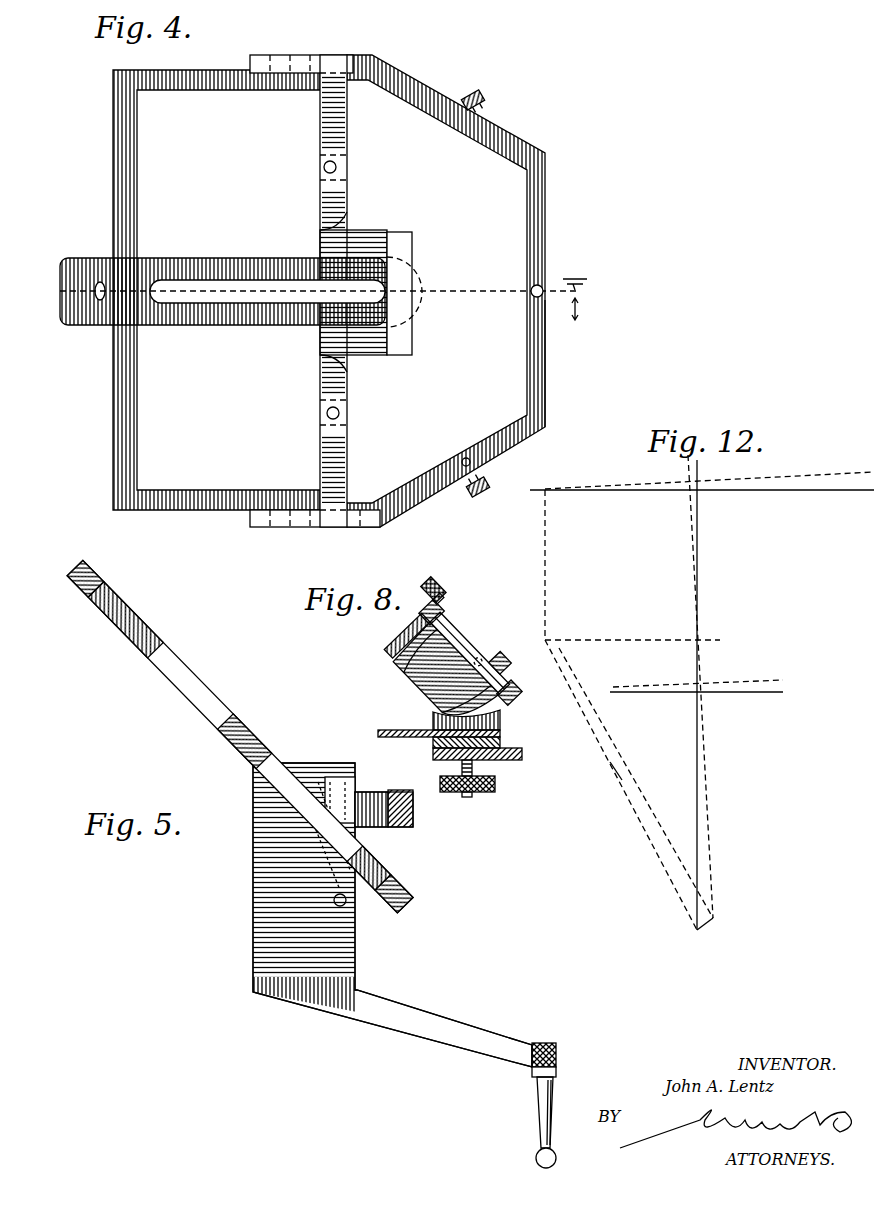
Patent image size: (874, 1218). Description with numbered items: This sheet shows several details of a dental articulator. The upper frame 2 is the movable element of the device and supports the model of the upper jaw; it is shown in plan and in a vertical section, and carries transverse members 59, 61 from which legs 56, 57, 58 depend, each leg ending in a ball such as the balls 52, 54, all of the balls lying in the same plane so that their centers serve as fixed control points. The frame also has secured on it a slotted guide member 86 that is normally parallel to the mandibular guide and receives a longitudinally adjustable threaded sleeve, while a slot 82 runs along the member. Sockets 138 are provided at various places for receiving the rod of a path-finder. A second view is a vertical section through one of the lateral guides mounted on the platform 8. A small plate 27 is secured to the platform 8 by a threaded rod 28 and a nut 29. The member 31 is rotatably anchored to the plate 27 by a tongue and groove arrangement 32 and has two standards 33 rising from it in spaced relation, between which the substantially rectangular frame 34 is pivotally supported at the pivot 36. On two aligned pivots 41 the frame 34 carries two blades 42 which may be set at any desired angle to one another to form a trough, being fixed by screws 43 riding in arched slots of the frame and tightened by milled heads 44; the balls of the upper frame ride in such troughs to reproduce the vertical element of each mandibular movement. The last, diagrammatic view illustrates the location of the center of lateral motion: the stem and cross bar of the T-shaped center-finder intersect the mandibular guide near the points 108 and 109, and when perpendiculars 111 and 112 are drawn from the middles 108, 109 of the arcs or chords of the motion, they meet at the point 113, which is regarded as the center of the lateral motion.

In FIG. 4, the upper frame 2 is at (551, 203).
In FIG. 5, the upper frame 2 is at (293, 762).
In FIG. 8, the platform 8 is at (505, 760).
In FIG. 8, the plate 27 is at (500, 742).
In FIG. 8, the threaded rod 28 is at (462, 765).
In FIG. 8, the nut 29 is at (480, 795).
In FIG. 8, the member 31 is at (425, 732).
In FIG. 8, the tongue and groove arrangement 32 is at (486, 716).
In FIG. 8, the standards 33 is at (514, 659).
In FIG. 8, the frame 34 is at (418, 691).
In FIG. 8, the pivot 36 is at (497, 642).
In FIG. 8, the alined pivots 41 is at (484, 643).
In FIG. 8, the blades 42 is at (481, 642).
In FIG. 8, the screws 43 is at (387, 648).
In FIG. 8, the milled heads 44 is at (384, 613).
In FIG. 5, the ball 52 is at (537, 1162).
In FIG. 5, the ball 54 is at (346, 903).
In FIG. 4, the leg 56 is at (535, 300).
In FIG. 5, the leg 56 is at (537, 1092).
In FIG. 4, the leg 57 is at (337, 427).
In FIG. 4, the leg 58 is at (336, 180).
In FIG. 5, the leg 58 is at (377, 862).
In FIG. 4, the transverse member 59 is at (548, 352).
In FIG. 5, the transverse member 59 is at (557, 1053).
In FIG. 4, the transverse member 61 is at (340, 388).
In FIG. 5, the transverse member 61 is at (340, 800).
In FIG. 4, the slot / rod 82 is at (228, 300).
In FIG. 5, the slot / rod 82 is at (251, 725).
In FIG. 4, the slotted guide member 86 is at (205, 267).
In FIG. 5, the slotted guide member 86 is at (254, 722).
In FIG. 12, the middle of arc 108 is at (706, 640).
In FIG. 12, the middle of arc 109 is at (548, 490).
In FIG. 12, the perpendicular 111 is at (625, 640).
In FIG. 12, the perpendicular 112 is at (547, 573).
In FIG. 12, the center of lateral motion 113 is at (548, 640).
In FIG. 4, the sockets 138 is at (462, 128).